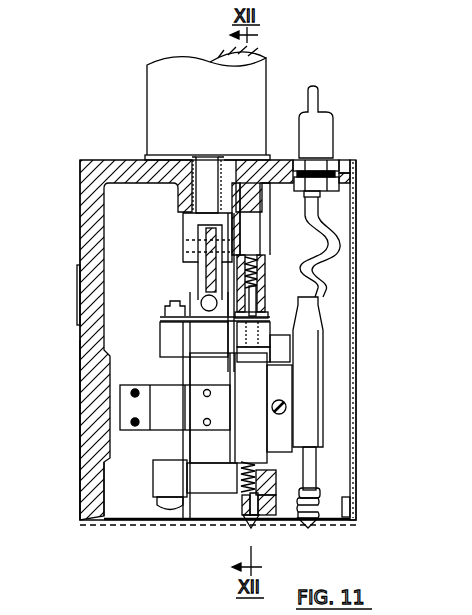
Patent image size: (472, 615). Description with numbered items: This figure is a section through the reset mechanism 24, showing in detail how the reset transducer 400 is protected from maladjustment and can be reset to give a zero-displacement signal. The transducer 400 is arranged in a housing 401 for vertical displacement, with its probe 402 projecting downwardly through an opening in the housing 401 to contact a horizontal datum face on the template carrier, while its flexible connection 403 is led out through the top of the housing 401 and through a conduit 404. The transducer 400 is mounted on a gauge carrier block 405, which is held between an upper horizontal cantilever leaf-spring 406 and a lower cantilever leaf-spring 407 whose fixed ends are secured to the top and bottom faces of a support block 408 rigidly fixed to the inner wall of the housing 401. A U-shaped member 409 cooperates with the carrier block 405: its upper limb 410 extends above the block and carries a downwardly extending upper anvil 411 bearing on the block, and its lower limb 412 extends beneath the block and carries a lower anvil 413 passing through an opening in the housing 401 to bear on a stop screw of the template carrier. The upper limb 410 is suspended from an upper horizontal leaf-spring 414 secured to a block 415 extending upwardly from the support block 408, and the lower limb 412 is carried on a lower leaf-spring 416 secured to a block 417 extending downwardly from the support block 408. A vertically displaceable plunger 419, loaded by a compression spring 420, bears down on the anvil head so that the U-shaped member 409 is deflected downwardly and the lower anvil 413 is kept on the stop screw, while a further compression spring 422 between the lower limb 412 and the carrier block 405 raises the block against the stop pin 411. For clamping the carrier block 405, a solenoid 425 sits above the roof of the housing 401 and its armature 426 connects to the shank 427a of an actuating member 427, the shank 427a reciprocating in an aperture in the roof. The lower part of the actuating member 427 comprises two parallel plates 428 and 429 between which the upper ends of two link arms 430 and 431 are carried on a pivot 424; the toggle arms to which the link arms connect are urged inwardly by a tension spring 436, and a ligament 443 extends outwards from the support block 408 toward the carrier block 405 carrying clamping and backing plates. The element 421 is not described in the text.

The reset mechanism 24 is at (83, 154).
The housing 401 is at (93, 210).
The support block 408 is at (115, 367).
The solenoid 425 is at (163, 92).
The armature 426 is at (200, 163).
The shank 427a is at (207, 186).
The actuating member 427 is at (194, 218).
The plate 428 is at (194, 229).
The pivot 424 is at (200, 248).
The link arm 430 is at (207, 268).
The tension spring 436 is at (197, 303).
The block 415 is at (160, 328).
The upper horizontal leaf-spring 414 is at (200, 306).
The upper horizontal cantilever leaf-spring 406 is at (200, 346).
The ligament 443 is at (167, 392).
The gauge carrier block 405 is at (257, 428).
The upper anvil 411 is at (270, 341).
The upper limb 410 is at (273, 327).
The U-shaped member 409 is at (272, 360).
The link arm 431 is at (238, 252).
The plate 429 is at (238, 226).
The compression spring 420 is at (250, 302).
The rod 421 is at (238, 262).
The plunger 419 is at (258, 300).
The conduit 404 is at (323, 133).
The flexible connection 403 is at (330, 234).
The reset transducer 400 is at (313, 382).
The lower limb 412 is at (305, 495).
The probe 402 is at (310, 532).
The lower cantilever leaf-spring 407 is at (200, 463).
The block 417 is at (160, 485).
The compression spring 422 is at (237, 475).
The lower leaf-spring 416 is at (210, 488).
The lower anvil 413 is at (245, 532).